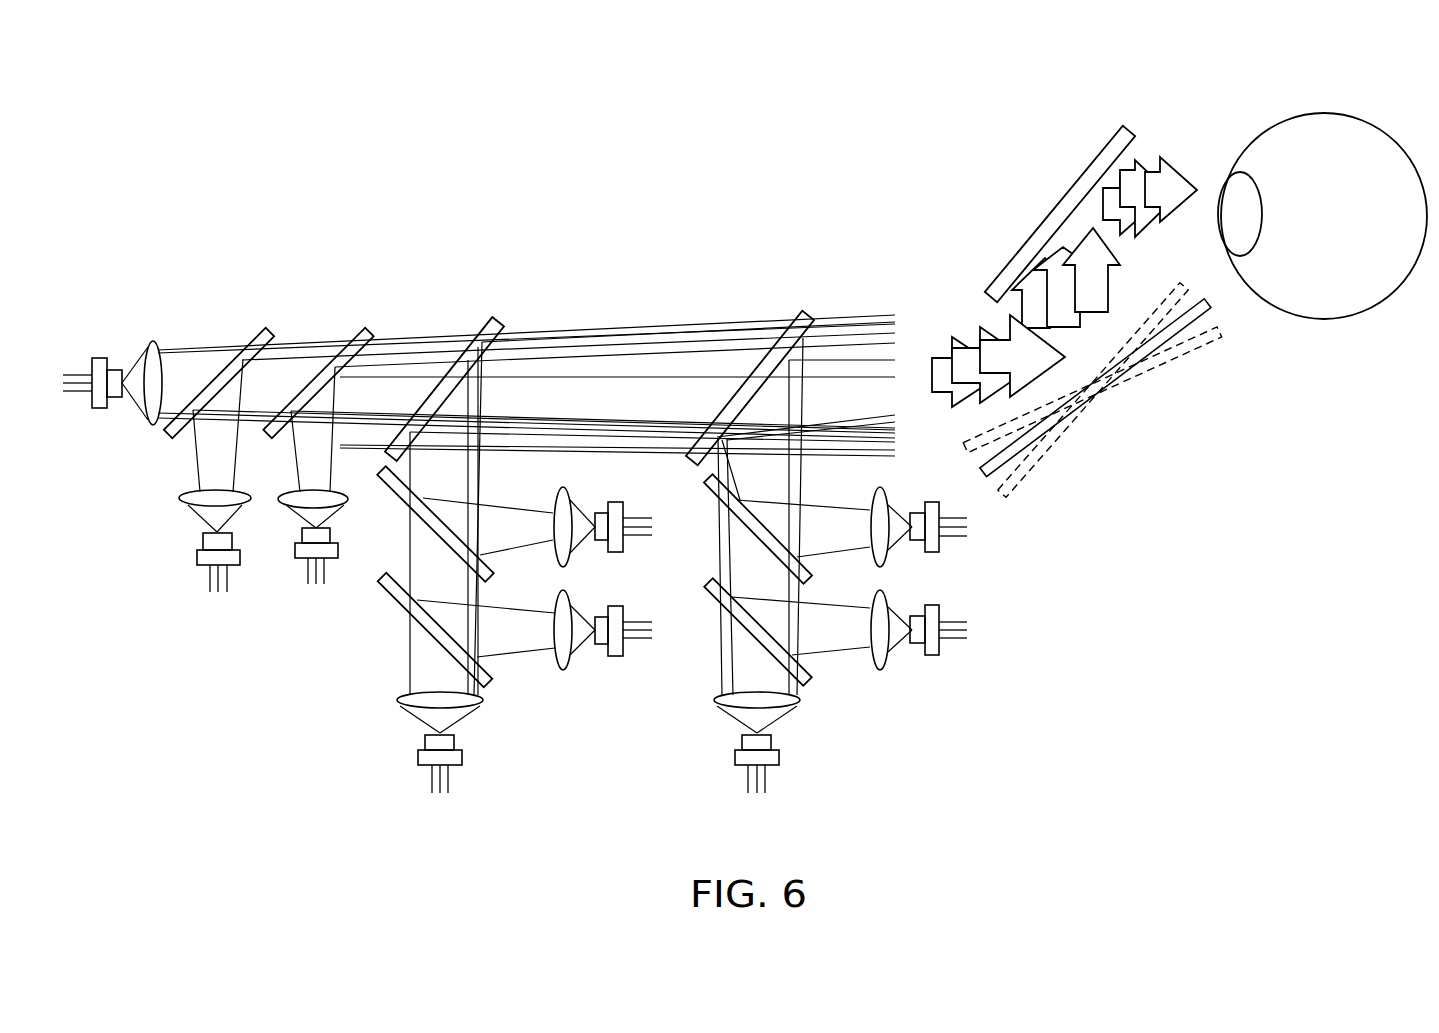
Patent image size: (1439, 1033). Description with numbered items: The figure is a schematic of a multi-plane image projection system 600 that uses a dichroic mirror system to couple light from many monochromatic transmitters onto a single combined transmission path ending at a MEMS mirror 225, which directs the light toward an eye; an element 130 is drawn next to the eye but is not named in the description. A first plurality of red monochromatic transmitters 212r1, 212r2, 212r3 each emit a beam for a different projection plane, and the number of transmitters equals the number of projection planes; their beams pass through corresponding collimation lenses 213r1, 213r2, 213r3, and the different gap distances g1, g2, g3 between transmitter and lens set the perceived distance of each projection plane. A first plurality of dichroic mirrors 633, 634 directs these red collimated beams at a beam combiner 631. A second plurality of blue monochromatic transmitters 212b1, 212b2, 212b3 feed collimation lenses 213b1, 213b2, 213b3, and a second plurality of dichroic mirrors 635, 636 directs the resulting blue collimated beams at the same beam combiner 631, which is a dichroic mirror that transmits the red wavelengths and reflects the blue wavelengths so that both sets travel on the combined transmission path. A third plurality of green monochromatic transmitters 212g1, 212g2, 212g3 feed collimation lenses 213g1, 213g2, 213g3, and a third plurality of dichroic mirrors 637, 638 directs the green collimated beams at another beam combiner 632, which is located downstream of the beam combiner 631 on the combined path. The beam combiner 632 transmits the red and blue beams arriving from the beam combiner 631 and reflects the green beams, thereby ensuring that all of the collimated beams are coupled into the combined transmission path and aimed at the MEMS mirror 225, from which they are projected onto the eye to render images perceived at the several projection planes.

The multi-plane image projection system 600 is at (160, 105).
The combiner 130 is at (1057, 198).
The MEMS mirror 225 is at (1210, 303).
The beam combiner 631 is at (498, 319).
The beam combiner 632 is at (810, 312).
The dichroic mirror 633 is at (266, 328).
The dichroic mirror 634 is at (367, 328).
The dichroic mirror 635 is at (431, 628).
The dichroic mirror 636 is at (386, 471).
The dichroic mirror 637 is at (736, 628).
The dichroic mirror 638 is at (738, 522).
The monochromatic transmitter 212r1 is at (300, 570).
The monochromatic transmitter 212r2 is at (100, 358).
The monochromatic transmitter 212r3 is at (197, 556).
The monochromatic transmitter 212b1 is at (617, 502).
The monochromatic transmitter 212b2 is at (418, 757).
The monochromatic transmitter 212b3 is at (617, 658).
The monochromatic transmitter 212g1 is at (940, 548).
The monochromatic transmitter 212g2 is at (778, 757).
The monochromatic transmitter 212g3 is at (940, 650).
The collimation lens 213r1 is at (342, 500).
The collimation lens 213r2 is at (153, 426).
The collimation lens 213r3 is at (180, 498).
The collimation lens 213b1 is at (560, 490).
The collimation lens 213b2 is at (397, 700).
The collimation lens 213b3 is at (566, 672).
The collimation lens 213g1 is at (882, 490).
The collimation lens 213g2 is at (802, 700).
The collimation lens 213g3 is at (882, 604).
The gap distance g1 is at (290, 513).
The gap distance g2 is at (143, 350).
The gap distance g3 is at (190, 513).